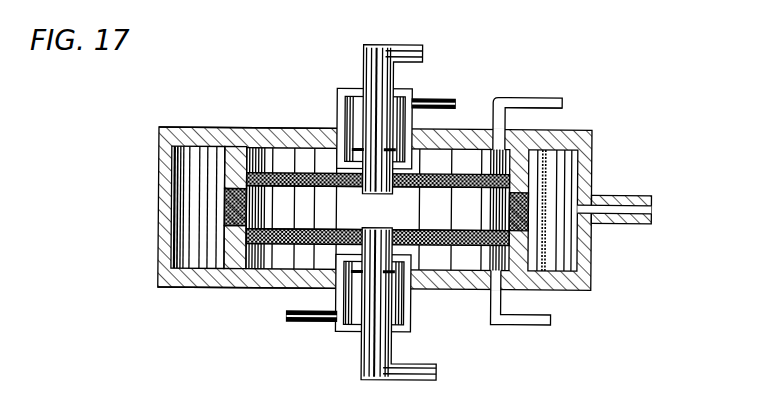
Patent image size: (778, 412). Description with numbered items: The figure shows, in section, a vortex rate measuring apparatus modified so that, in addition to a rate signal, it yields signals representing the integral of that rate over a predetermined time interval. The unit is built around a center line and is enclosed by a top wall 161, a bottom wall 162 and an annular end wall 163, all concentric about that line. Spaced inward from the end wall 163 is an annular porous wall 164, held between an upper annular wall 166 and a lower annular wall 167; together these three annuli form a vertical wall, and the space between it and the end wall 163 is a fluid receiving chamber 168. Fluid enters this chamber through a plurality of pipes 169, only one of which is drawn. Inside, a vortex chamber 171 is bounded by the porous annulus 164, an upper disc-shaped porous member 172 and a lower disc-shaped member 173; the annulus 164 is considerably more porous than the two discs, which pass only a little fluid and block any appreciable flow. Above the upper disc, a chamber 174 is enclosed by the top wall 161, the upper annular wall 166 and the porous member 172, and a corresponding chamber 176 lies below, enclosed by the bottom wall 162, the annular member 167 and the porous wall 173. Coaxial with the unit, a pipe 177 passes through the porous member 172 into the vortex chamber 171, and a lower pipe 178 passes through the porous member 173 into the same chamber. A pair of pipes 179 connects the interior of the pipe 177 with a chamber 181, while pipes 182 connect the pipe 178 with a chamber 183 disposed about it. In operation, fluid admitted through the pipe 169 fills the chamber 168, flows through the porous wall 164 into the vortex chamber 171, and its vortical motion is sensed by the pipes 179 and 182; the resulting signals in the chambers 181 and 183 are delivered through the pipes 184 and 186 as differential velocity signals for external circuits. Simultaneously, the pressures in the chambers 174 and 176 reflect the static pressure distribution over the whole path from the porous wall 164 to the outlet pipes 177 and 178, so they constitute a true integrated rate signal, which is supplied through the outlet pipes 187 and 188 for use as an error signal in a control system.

The top wall 161 is at (287, 137).
The bottom wall 162 is at (267, 280).
The annular end wall 163 is at (159, 188).
The annular porous wall 164 is at (227, 217).
The upper annular wall 166 is at (226, 165).
The lower annular wall 167 is at (228, 252).
The fluid receiving chamber 168 is at (562, 252).
The pipe 169 is at (652, 213).
The vortex chamber 171 is at (490, 212).
The upper disc-shaped porous member 172 is at (478, 120).
The lower disc-shaped member 173 is at (290, 240).
The chamber 174 is at (273, 153).
The chamber 176 is at (471, 266).
The pipe 177 is at (373, 69).
The lower pipe 178 is at (373, 347).
The pipes 179 is at (355, 145).
The chamber 181 is at (352, 112).
The pipes 182 is at (338, 297).
The chamber 183 is at (400, 326).
The pipe 184 is at (462, 172).
The pipe 186 is at (303, 322).
The outlet pipe 187 is at (563, 100).
The outlet pipe 188 is at (531, 323).